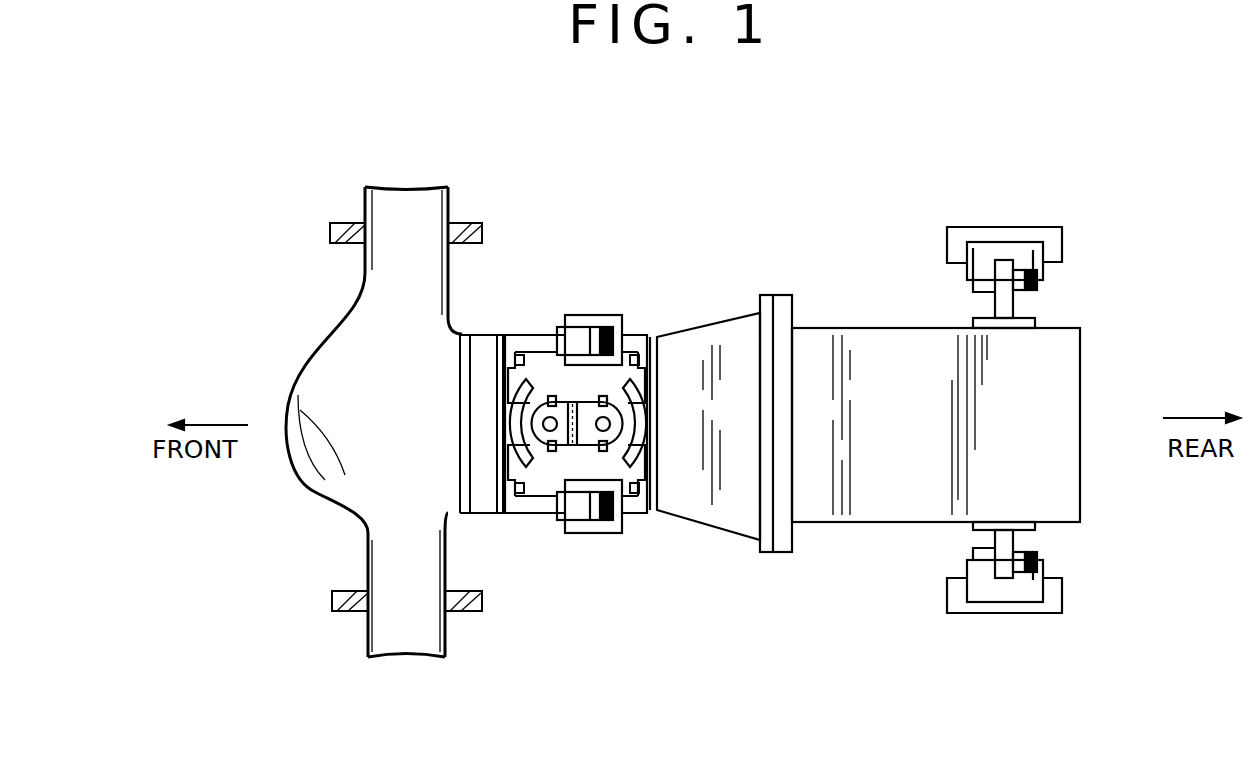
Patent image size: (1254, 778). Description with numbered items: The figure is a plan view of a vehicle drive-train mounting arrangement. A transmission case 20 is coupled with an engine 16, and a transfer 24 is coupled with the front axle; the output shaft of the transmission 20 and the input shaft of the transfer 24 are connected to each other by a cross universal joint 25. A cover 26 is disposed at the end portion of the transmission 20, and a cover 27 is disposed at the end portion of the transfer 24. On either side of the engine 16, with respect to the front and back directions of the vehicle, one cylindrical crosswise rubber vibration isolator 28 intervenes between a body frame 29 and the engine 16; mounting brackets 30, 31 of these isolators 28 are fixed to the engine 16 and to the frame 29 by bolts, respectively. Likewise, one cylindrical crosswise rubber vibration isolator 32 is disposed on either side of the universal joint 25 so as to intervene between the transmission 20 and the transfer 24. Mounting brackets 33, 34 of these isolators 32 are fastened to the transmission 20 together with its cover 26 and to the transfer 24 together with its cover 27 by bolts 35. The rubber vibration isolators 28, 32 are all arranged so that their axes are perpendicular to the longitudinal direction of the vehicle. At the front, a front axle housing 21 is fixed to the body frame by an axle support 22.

The engine 16 is at (838, 330).
The transmission case 20 is at (762, 300).
The front axle housing 21 is at (297, 380).
The axle support 22 is at (338, 222).
The transfer 24 is at (483, 505).
The cross universal joint 25 is at (565, 413).
The cover 26 is at (673, 340).
The cover 27 is at (500, 513).
The rubber vibration isolator 28 is at (1035, 285).
The body frame 29 is at (1033, 228).
The mounting bracket 30 is at (1013, 305).
The mounting bracket 31 is at (1043, 250).
The rubber vibration isolator 32 is at (578, 320).
The mounting bracket 33 is at (650, 330).
The mounting bracket 34 is at (513, 337).
The bolts 35 is at (508, 333).